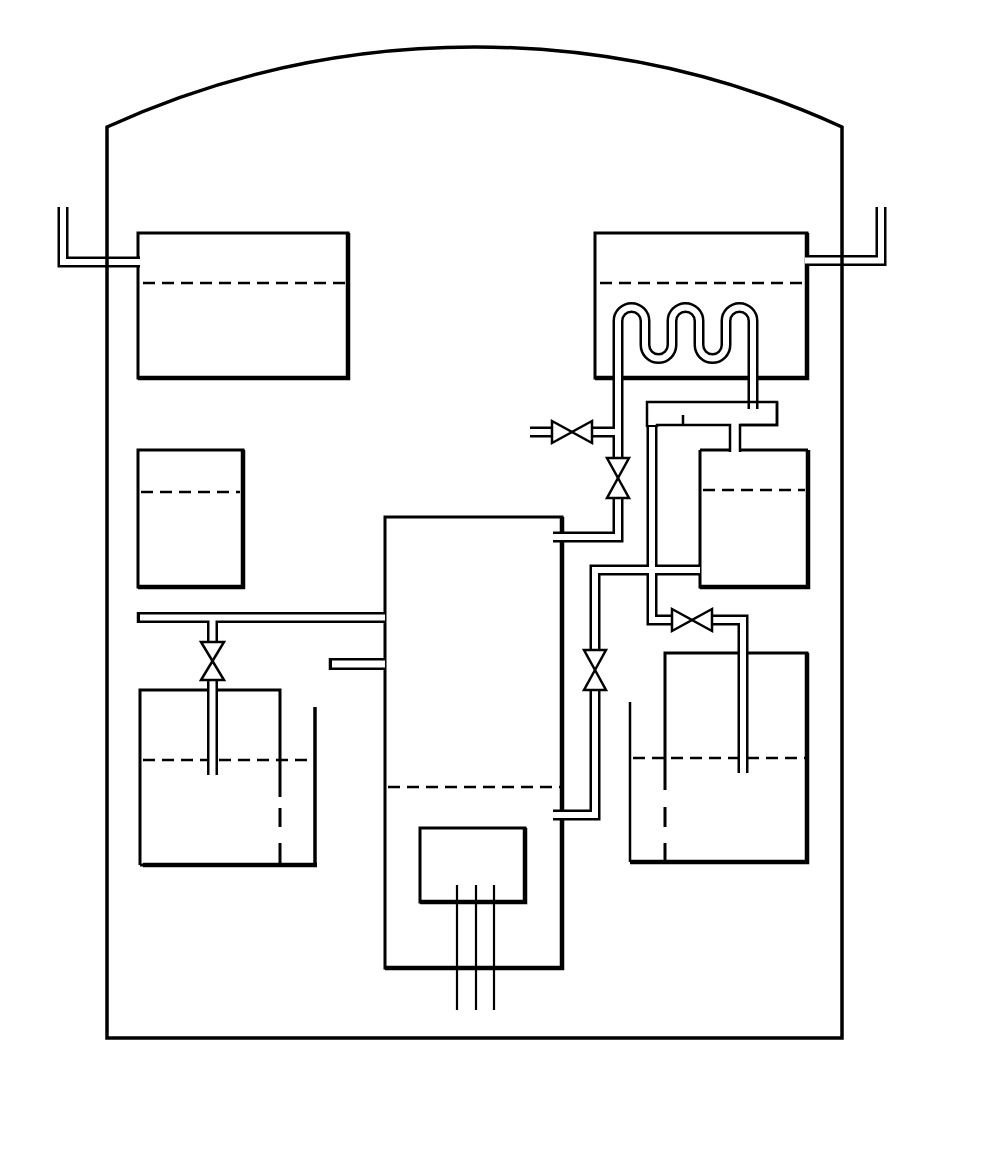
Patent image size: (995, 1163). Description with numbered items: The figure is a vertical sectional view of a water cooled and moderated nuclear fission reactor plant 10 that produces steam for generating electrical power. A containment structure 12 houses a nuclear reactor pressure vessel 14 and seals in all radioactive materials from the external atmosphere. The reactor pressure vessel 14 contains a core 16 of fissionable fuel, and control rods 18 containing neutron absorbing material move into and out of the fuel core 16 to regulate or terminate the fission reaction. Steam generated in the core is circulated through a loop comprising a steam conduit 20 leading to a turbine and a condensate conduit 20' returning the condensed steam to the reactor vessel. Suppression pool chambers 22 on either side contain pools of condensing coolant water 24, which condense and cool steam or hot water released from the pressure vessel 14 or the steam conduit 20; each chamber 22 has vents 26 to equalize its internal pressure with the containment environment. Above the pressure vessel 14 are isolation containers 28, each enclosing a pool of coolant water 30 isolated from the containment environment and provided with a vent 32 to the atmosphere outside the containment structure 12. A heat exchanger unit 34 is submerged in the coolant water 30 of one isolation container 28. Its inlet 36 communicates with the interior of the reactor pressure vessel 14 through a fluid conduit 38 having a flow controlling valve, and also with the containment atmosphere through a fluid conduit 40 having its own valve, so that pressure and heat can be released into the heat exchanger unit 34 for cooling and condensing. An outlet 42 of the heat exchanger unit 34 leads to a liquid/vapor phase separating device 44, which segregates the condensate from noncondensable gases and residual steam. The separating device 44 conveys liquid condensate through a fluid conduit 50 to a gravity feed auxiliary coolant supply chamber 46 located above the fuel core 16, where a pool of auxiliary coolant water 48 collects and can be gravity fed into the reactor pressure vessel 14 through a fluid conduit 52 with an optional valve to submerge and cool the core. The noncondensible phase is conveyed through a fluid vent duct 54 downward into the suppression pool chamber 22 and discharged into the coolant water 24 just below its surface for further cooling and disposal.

The nuclear fission reactor plant 10 is at (284, 48).
The containment structure 12 is at (622, 56).
The nuclear reactor pressure vessel 14 is at (418, 514).
The core 16 is at (420, 870).
The control rods 18 is at (457, 977).
The steam conduit 20 is at (261, 666).
The condensate conduit 20' is at (357, 695).
The suppression pool chamber 22 is at (140, 727).
The condensing coolant water 24 is at (202, 829).
The vents 26 is at (281, 843).
The isolation container 28 is at (292, 233).
The pool of coolant water 30 is at (258, 333).
The vent 32 is at (56, 218).
The heat exchanger unit 34 is at (613, 332).
The inlet 36 is at (612, 405).
The fluid conduit 38 is at (612, 515).
The fluid conduit 40 is at (531, 437).
The outlet 42 is at (758, 392).
The liquid/vapor phase separating device 44 is at (767, 427).
The gravity feed auxiliary coolant supply chamber 46 is at (808, 512).
The auxiliary coolant water 48 is at (740, 542).
The fluid conduit 50 is at (730, 437).
The fluid conduit 52 is at (600, 634).
The fluid vent duct 54 is at (750, 623).